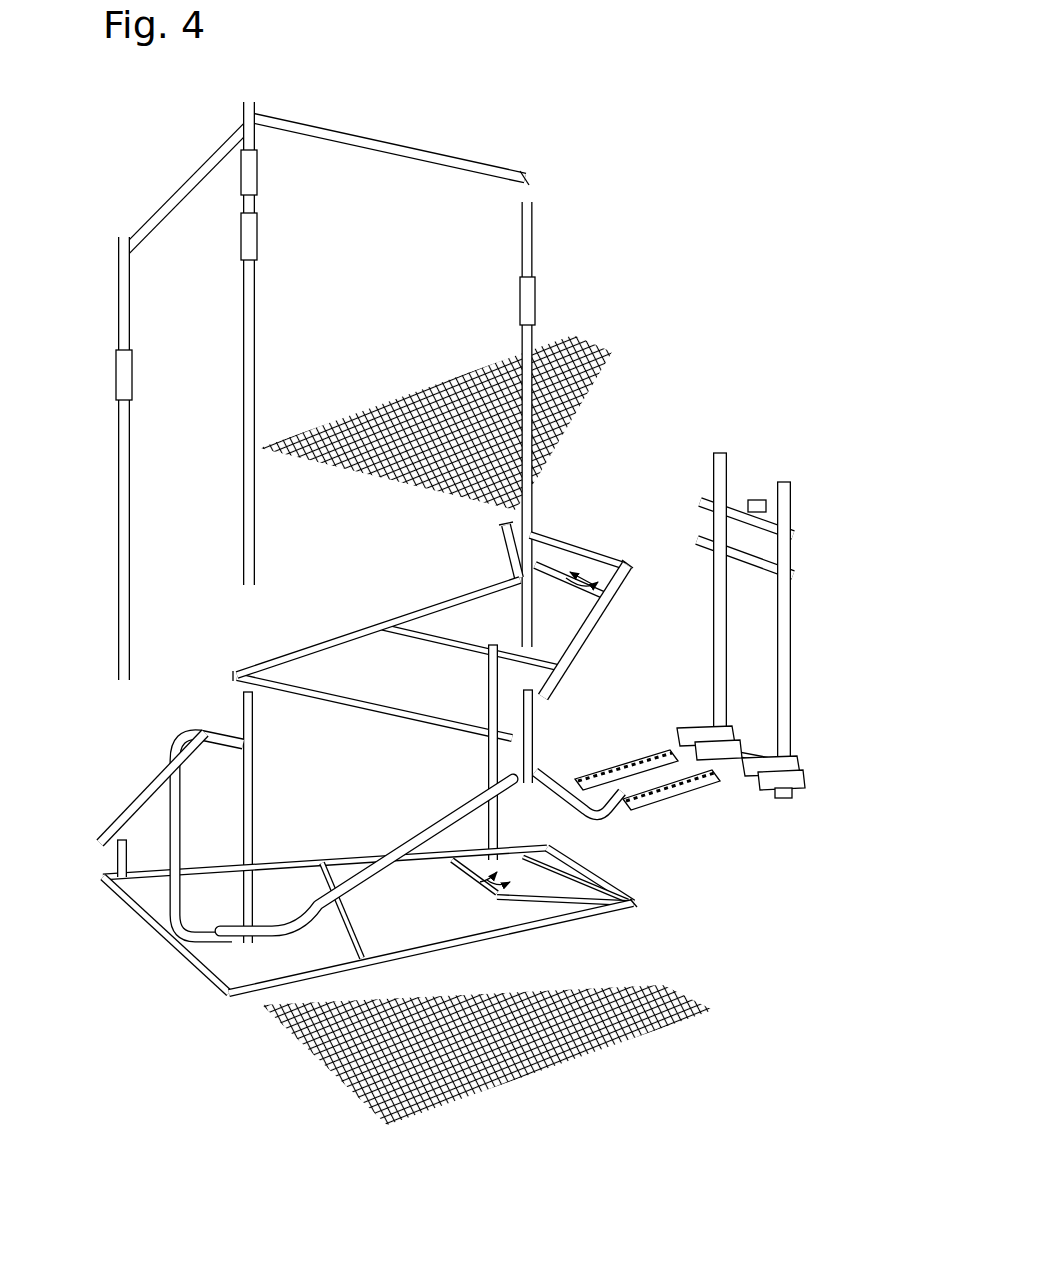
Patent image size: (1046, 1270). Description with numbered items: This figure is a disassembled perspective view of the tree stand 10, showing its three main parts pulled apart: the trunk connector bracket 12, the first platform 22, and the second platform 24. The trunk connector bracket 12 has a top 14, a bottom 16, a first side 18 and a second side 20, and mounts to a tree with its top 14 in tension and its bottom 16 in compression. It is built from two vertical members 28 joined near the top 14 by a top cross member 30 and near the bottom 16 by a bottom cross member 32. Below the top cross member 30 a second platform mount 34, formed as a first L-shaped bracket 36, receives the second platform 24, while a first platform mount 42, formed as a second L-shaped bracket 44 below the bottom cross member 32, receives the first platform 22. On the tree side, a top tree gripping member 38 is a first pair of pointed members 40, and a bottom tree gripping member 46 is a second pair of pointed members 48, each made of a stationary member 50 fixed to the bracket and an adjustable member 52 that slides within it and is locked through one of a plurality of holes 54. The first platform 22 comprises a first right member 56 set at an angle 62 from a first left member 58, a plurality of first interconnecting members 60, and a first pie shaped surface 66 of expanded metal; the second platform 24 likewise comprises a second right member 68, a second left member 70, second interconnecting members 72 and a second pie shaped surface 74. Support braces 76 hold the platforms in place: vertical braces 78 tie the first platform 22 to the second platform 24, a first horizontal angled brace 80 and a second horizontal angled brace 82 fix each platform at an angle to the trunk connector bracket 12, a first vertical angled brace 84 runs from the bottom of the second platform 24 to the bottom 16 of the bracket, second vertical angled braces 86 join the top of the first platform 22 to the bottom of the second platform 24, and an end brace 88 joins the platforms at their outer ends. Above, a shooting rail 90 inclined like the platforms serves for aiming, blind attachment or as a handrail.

The tree stand 10 is at (325, 345).
The trunk connector bracket 12 is at (815, 621).
The top 14 is at (718, 615).
The bottom 16 is at (746, 787).
The first side 18 is at (714, 595).
The second side 20 is at (805, 705).
The first platform 22 is at (347, 917).
The second platform 24 is at (397, 723).
The vertical members 28 is at (735, 650).
The top cross member 30 is at (716, 490).
The bottom cross member 32 is at (748, 740).
The second platform mount 34 is at (702, 521).
The first L-shaped bracket 36 is at (703, 545).
The top tree gripping member 38 is at (785, 459).
The first pair of pointed members 40 is at (760, 500).
The first platform mount 42 is at (789, 802).
The second L-shaped bracket 44 is at (762, 782).
The bottom tree gripping member 46 is at (626, 757).
The second pair of pointed members 48 is at (675, 808).
The stationary member 50 is at (705, 745).
The adjustable member 52 is at (650, 790).
The holes 54 is at (645, 772).
The first right member 56 is at (223, 866).
The first left member 58 is at (352, 958).
The first interconnecting members 60 is at (560, 845).
The angle 62 is at (576, 565).
The first pie shaped surface 66 is at (565, 1045).
The second right member 68 is at (342, 637).
The second left member 70 is at (573, 645).
The second interconnecting members 72 is at (598, 570).
The second pie shaped surface 74 is at (387, 410).
The support braces 76 is at (279, 834).
The vertical braces 78 is at (482, 760).
The first horizontal angled brace 80 is at (560, 902).
The second horizontal angled brace 82 is at (505, 560).
The first vertical angled brace 84 is at (595, 812).
The second vertical angled braces 86 is at (130, 800).
The end brace 88 is at (168, 900).
The shooting rail 90 is at (172, 202).